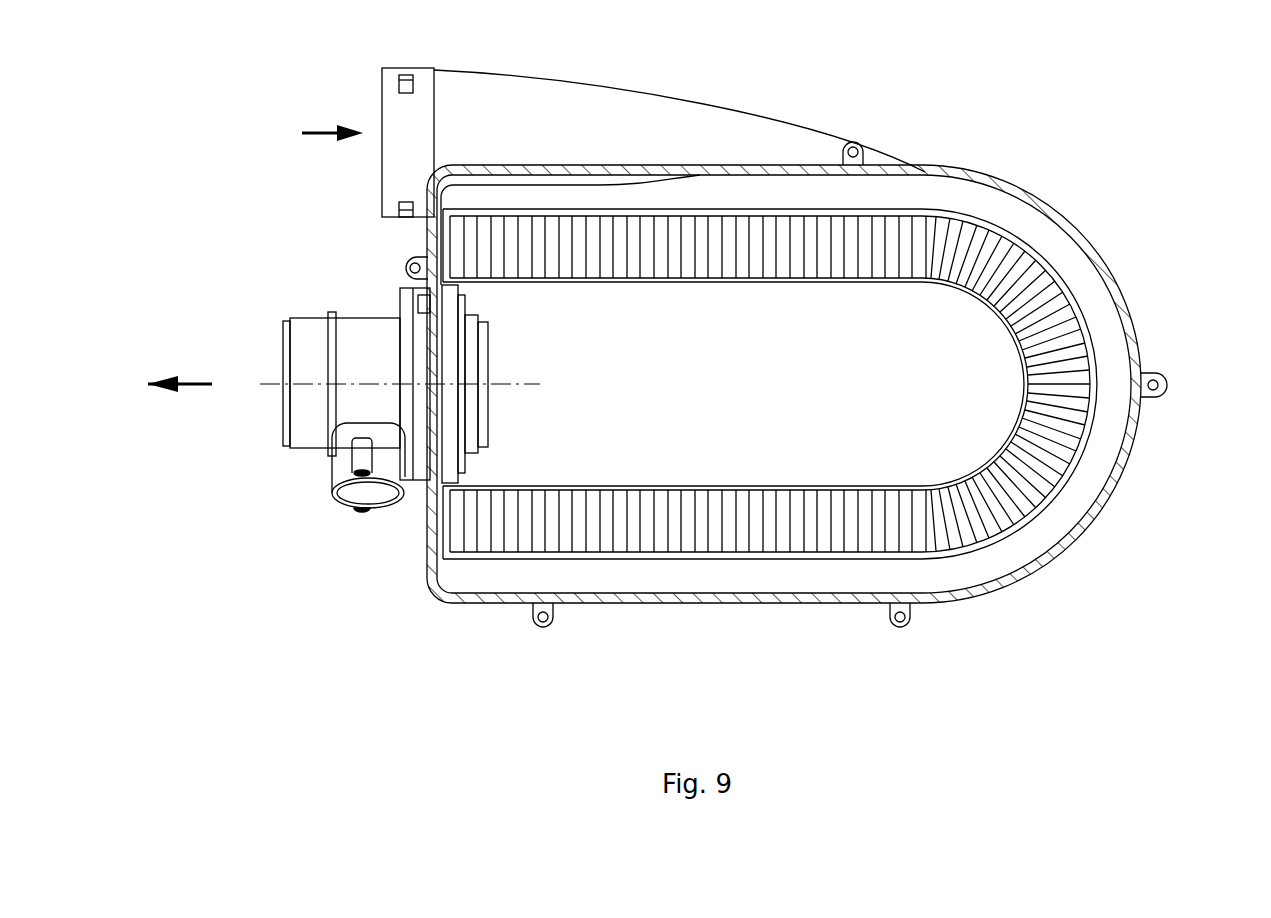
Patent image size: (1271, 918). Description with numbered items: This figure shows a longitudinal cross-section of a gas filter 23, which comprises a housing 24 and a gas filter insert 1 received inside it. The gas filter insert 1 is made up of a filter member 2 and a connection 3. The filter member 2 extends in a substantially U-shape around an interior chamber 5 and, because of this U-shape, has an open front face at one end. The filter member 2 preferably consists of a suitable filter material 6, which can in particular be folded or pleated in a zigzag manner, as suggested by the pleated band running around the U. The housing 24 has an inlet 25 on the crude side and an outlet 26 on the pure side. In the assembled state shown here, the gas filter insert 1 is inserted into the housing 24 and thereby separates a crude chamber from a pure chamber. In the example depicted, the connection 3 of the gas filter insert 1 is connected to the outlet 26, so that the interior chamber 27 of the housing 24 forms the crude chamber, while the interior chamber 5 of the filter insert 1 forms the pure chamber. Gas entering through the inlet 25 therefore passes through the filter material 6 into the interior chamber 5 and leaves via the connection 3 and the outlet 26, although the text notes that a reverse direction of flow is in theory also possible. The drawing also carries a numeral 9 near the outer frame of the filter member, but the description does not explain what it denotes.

The gas filter insert 1 is at (1078, 294).
The filter member 2 is at (769, 505).
The connection 3 is at (470, 303).
The interior chamber 5 is at (734, 399).
The filter material 6 is at (925, 518).
The outer support frame 9 is at (1088, 430).
The gas filter 23 is at (1135, 188).
The housing 24 is at (985, 178).
The inlet 25 is at (398, 160).
The outlet 26 is at (303, 430).
The interior chamber of the housing 27 is at (767, 575).